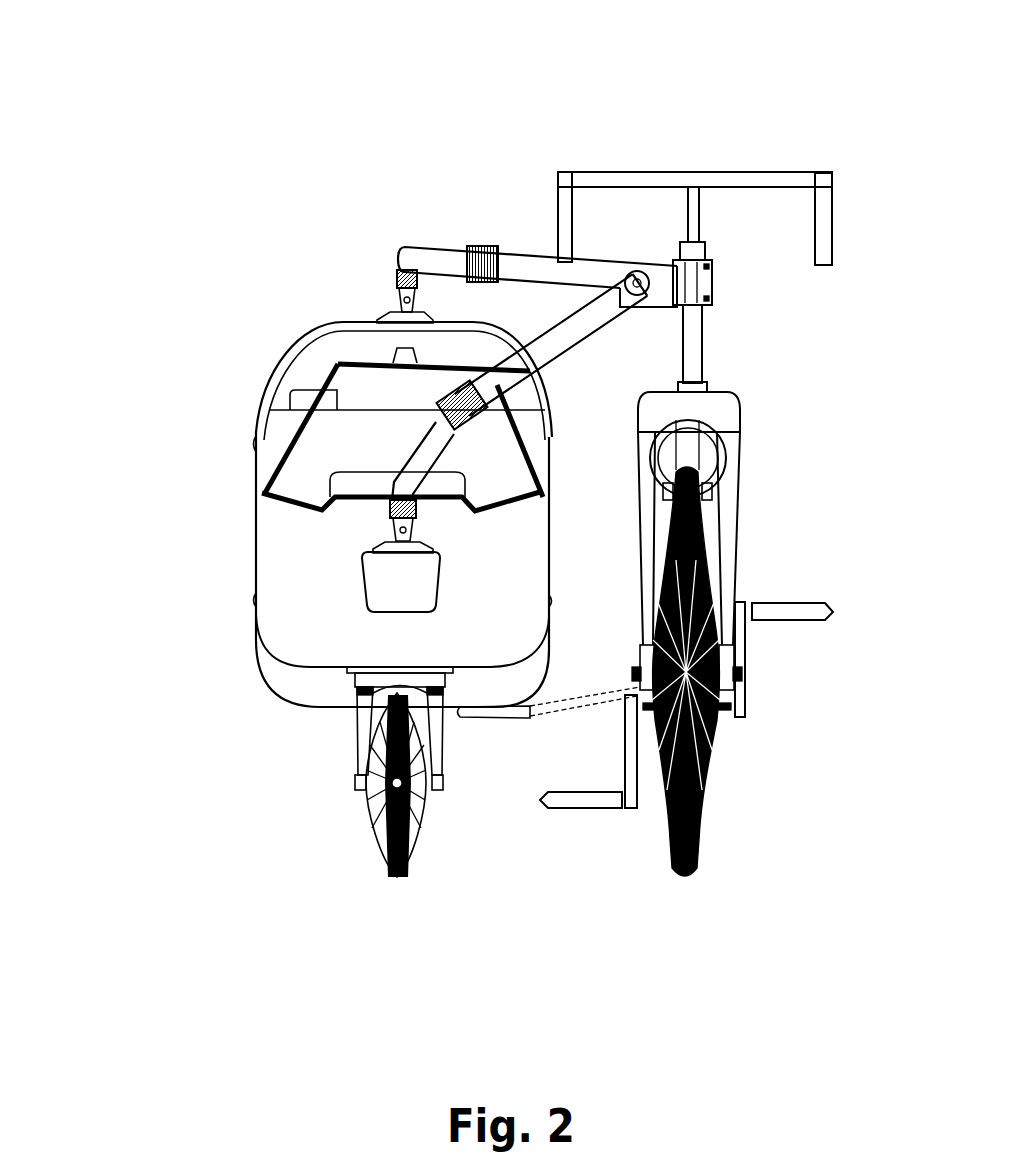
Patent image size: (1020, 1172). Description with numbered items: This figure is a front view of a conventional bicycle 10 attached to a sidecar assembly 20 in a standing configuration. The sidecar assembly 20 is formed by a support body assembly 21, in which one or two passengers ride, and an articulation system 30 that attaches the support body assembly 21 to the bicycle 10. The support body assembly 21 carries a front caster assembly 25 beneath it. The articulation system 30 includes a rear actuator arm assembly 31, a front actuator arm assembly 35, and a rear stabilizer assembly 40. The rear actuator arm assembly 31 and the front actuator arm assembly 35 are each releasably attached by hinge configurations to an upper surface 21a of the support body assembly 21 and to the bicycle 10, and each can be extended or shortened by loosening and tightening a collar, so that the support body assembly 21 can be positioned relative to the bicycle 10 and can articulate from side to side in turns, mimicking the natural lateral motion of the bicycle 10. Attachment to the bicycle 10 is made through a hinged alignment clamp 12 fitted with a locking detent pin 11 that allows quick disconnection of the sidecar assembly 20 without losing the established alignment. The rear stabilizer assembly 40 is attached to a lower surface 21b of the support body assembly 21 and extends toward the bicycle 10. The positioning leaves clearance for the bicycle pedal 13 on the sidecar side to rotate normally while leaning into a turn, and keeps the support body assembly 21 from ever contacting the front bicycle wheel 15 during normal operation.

The bicycle 10 is at (745, 935).
The locking detent pin 11 is at (655, 300).
The hinged alignment clamp 12 is at (714, 273).
The bicycle pedal 13 is at (590, 810).
The front bicycle wheel 15 is at (700, 847).
The sidecar assembly 20 is at (183, 325).
The support body assembly 21 is at (260, 462).
The upper surface 21a is at (343, 358).
The lower surface 21b is at (310, 712).
The front caster assembly 25 is at (360, 745).
The articulation system 30 is at (653, 82).
The rear actuator arm assembly 31 is at (428, 247).
The front actuator arm assembly 35 is at (566, 354).
The rear stabilizer assembly 40 is at (572, 718).